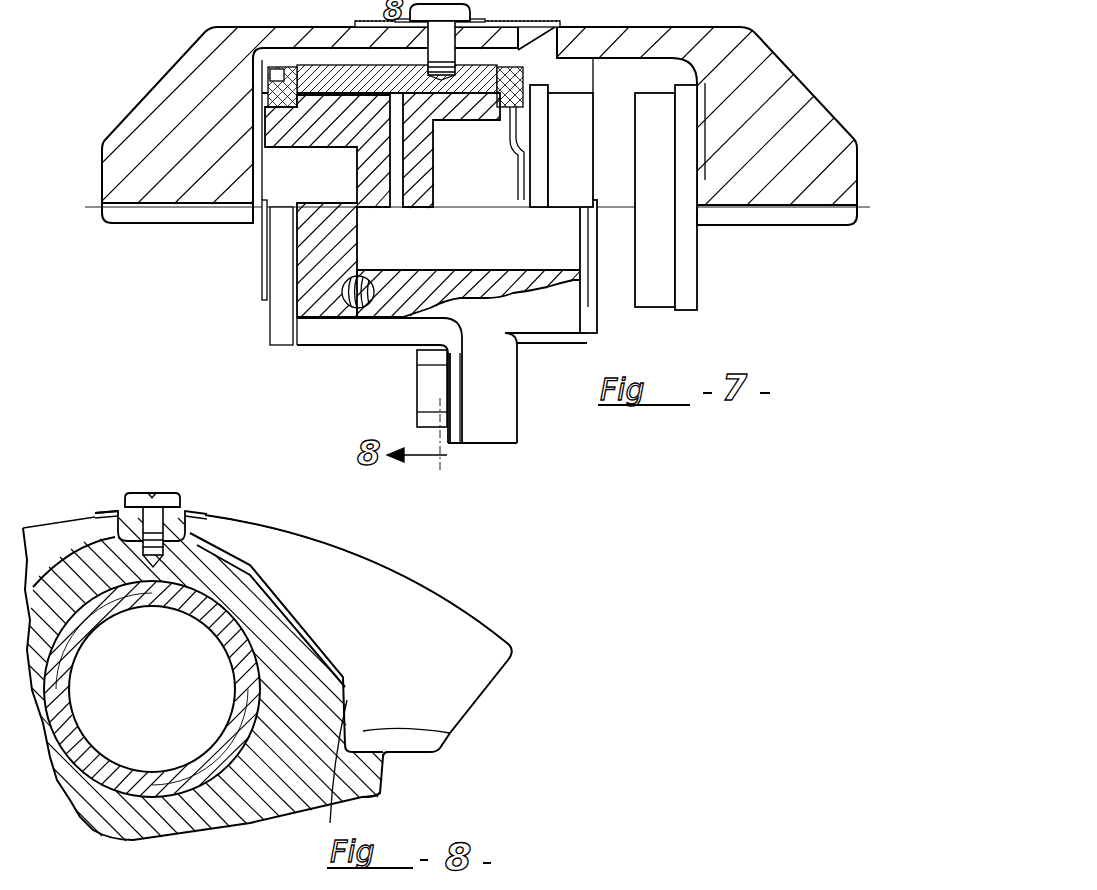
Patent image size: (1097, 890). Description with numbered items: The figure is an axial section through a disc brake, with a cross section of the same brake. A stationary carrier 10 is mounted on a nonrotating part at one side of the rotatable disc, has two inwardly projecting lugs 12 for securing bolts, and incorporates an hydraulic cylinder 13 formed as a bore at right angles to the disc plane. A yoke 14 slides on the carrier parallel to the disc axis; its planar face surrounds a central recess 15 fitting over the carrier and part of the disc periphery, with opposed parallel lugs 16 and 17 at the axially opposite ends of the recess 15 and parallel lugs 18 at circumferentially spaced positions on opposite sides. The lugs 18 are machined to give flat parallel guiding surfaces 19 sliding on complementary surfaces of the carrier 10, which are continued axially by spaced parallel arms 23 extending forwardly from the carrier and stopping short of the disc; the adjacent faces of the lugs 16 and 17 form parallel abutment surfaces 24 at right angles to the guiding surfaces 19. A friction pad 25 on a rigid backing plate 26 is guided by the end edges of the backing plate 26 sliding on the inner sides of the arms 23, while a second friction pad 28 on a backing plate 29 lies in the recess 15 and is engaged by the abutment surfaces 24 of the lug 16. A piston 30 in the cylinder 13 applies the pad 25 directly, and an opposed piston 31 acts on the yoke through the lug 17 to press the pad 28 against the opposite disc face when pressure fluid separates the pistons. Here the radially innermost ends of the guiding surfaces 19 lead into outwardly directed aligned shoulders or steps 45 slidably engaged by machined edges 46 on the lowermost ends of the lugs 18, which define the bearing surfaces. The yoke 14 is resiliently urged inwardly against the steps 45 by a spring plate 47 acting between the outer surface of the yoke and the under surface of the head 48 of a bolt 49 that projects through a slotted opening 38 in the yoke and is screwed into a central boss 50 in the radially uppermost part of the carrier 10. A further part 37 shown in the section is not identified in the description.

In FIG. 7, the carrier 10 is at (370, 333).
In FIG. 8, the carrier 10 is at (288, 800).
In FIG. 7, the lugs 12 is at (485, 420).
In FIG. 7, the hydraulic cylinder 13 is at (327, 95).
In FIG. 8, the hydraulic cylinder 13 is at (168, 798).
In FIG. 7, the yoke 14 is at (715, 37).
In FIG. 8, the yoke 14 is at (57, 537).
In FIG. 7, the central recess 15 is at (590, 112).
In FIG. 7, the lug 16 is at (797, 190).
In FIG. 7, the lug 17 is at (168, 197).
In FIG. 7, the lugs 18 is at (560, 260).
In FIG. 8, the lugs 18 is at (450, 733).
In FIG. 8, the guiding surfaces 19 is at (333, 800).
In FIG. 7, the arms 23 is at (317, 303).
In FIG. 7, the abutment surfaces 24 is at (257, 228).
In FIG. 7, the friction pad 25 is at (615, 112).
In FIG. 7, the backing plate 26 is at (560, 67).
In FIG. 7, the friction pad 28 is at (660, 297).
In FIG. 7, the backing plate 29 is at (688, 303).
In FIG. 8, the piston 30 is at (118, 785).
In FIG. 7, the piston 31 is at (395, 87).
In FIG. 7, the seal ring 37 is at (295, 80).
In FIG. 7, the slotted opening 38 is at (480, 37).
In FIG. 8, the slotted opening 38 is at (118, 516).
In FIG. 8, the shoulders or steps 45 is at (378, 793).
In FIG. 8, the machined edges 46 is at (383, 763).
In FIG. 7, the spring plate 47 is at (540, 83).
In FIG. 8, the spring plate 47 is at (197, 517).
In FIG. 7, the head 48 is at (440, 42).
In FIG. 8, the head 48 is at (137, 493).
In FIG. 8, the bolt 49 is at (178, 486).
In FIG. 8, the central boss 50 is at (200, 527).